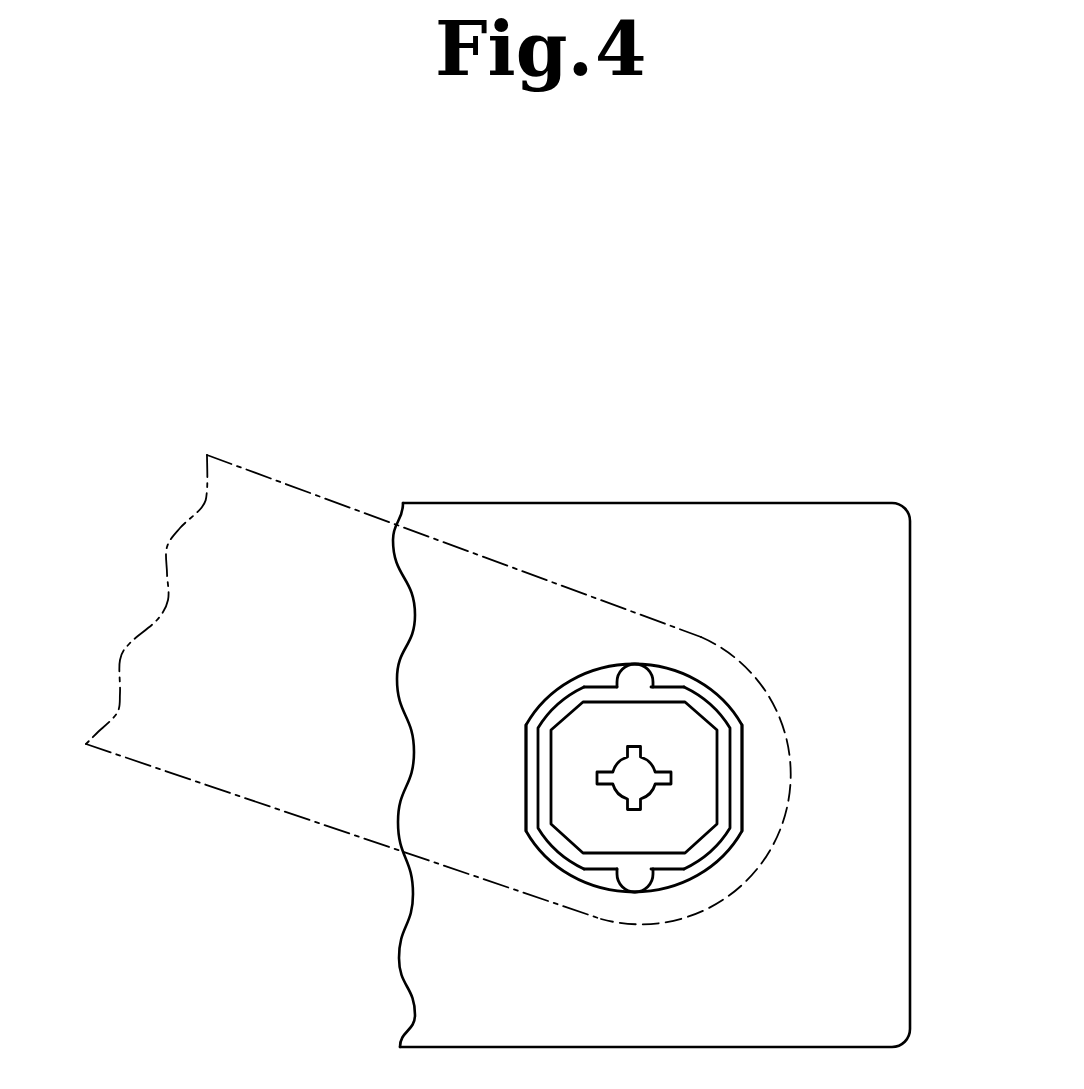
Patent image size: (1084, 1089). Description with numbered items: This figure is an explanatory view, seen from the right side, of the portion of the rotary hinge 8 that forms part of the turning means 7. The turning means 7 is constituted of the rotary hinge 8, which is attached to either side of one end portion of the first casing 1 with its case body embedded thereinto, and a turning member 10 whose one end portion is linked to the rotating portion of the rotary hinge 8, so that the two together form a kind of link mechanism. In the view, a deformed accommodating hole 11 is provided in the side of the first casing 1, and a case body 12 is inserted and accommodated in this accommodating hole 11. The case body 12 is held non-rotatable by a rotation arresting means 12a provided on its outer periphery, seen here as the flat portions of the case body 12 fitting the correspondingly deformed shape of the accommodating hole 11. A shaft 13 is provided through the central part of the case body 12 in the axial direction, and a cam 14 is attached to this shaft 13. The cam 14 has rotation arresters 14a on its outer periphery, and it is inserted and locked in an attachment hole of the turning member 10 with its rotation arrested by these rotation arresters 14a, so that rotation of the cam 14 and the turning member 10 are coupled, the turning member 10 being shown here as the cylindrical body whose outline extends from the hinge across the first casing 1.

The first casing 1 is at (677, 503).
The turning means 7 is at (662, 777).
The rotary hinge 8 is at (544, 870).
The turning member 10 is at (230, 793).
The deformed accommodating hole 11 is at (730, 707).
The case body 12 is at (743, 752).
The rotation arresting means 12a is at (743, 780).
The shaft 13 is at (625, 783).
The cam 14 is at (681, 777).
The rotation arresters 14a is at (634, 672).